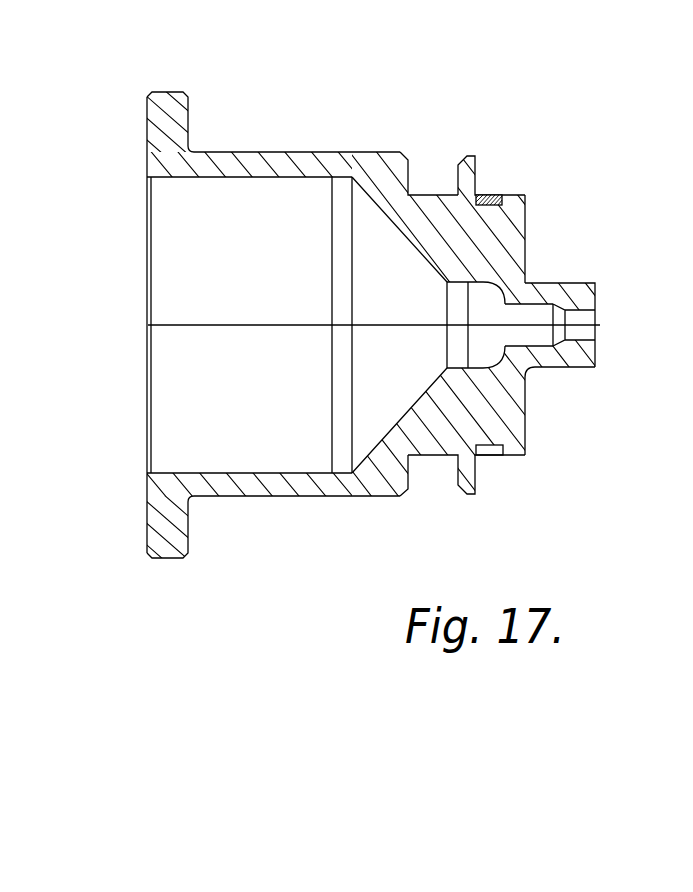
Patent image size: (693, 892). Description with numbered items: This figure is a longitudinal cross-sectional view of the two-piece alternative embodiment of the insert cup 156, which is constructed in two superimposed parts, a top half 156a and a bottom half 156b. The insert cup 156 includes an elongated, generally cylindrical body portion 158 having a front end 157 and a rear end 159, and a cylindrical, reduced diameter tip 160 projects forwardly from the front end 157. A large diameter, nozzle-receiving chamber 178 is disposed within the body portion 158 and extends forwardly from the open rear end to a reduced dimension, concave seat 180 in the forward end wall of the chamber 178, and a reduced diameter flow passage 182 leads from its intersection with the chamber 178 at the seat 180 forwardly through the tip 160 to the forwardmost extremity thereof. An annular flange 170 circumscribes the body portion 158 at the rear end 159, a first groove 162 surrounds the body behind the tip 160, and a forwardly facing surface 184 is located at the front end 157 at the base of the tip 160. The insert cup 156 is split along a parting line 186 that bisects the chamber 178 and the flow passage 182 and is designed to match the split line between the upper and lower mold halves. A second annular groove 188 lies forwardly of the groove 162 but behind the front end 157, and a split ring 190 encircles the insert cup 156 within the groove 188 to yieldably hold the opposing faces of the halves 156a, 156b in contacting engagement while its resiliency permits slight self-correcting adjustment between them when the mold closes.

The insert cup 156 is at (352, 88).
The top half 156a is at (406, 149).
The bottom half 156b is at (402, 504).
The front end 157 is at (525, 220).
The body portion 158 is at (244, 152).
The rear end 159 is at (146, 128).
The tip 160 is at (570, 288).
The groove 162 is at (433, 468).
The annular flange 170 is at (168, 102).
The nozzle-receiving chamber 178 is at (183, 294).
The concave seat 180 is at (490, 298).
The flow passage 182 is at (586, 317).
The forwardly facing surface 184 is at (525, 388).
The parting line 186 is at (187, 325).
The second annular groove 188 is at (492, 456).
The split ring 190 is at (492, 196).